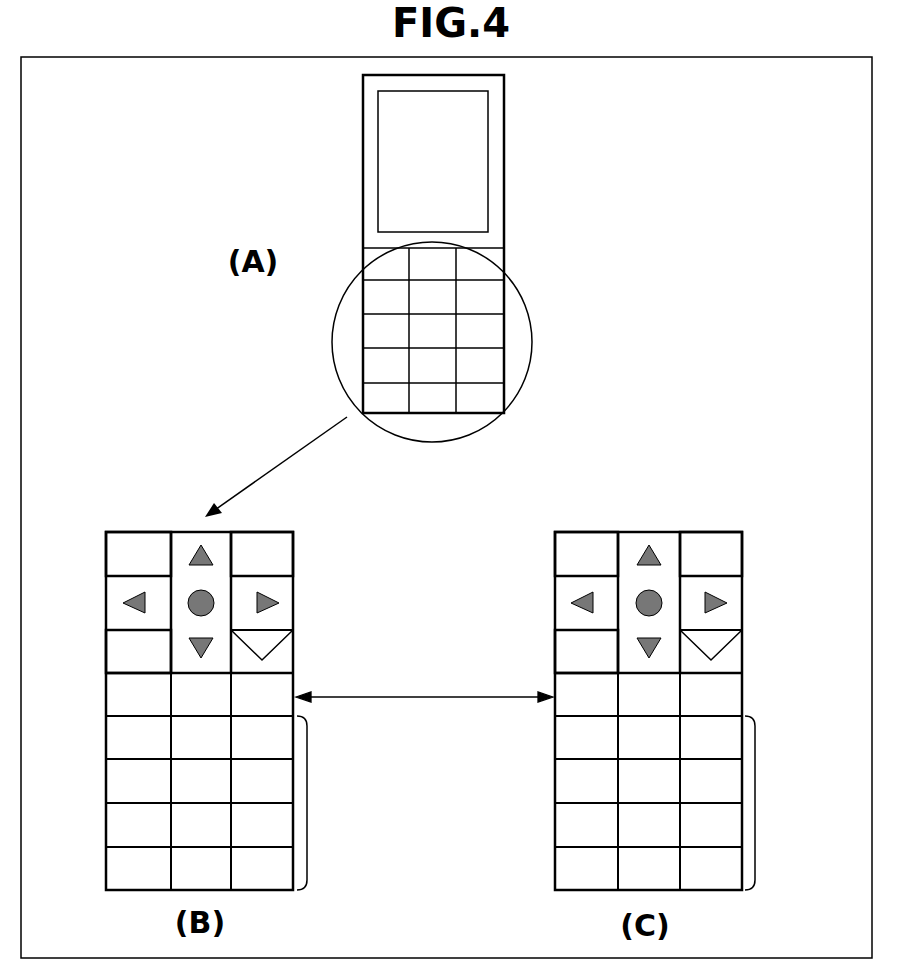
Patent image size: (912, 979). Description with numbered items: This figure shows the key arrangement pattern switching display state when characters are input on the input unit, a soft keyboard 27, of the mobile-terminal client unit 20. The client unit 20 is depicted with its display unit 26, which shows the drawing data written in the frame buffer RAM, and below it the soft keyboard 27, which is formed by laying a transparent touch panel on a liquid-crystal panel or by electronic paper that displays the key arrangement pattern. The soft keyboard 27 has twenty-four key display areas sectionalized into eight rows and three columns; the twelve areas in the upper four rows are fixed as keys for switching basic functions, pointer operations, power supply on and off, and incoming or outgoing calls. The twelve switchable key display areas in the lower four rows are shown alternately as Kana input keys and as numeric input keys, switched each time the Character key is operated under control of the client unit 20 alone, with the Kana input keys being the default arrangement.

The client unit 20 is at (363, 148).
The display unit 26 is at (482, 148).
The input unit (soft keyboard) 27 is at (251, 532).